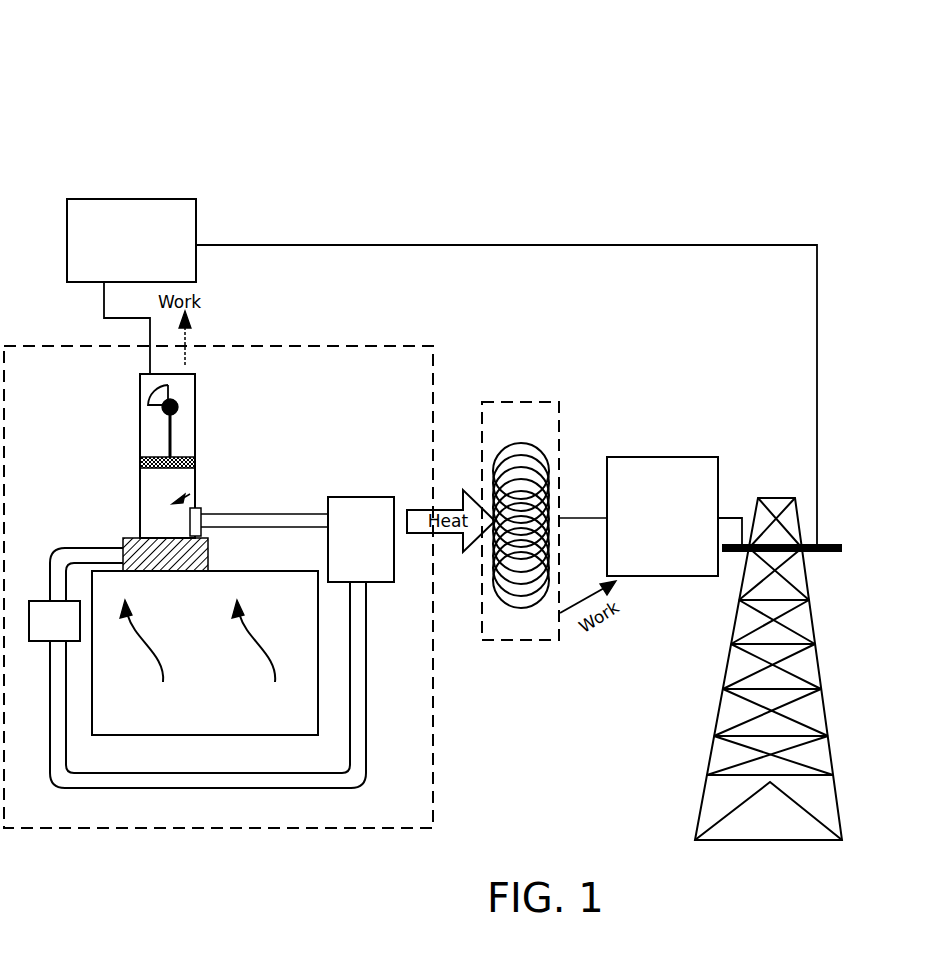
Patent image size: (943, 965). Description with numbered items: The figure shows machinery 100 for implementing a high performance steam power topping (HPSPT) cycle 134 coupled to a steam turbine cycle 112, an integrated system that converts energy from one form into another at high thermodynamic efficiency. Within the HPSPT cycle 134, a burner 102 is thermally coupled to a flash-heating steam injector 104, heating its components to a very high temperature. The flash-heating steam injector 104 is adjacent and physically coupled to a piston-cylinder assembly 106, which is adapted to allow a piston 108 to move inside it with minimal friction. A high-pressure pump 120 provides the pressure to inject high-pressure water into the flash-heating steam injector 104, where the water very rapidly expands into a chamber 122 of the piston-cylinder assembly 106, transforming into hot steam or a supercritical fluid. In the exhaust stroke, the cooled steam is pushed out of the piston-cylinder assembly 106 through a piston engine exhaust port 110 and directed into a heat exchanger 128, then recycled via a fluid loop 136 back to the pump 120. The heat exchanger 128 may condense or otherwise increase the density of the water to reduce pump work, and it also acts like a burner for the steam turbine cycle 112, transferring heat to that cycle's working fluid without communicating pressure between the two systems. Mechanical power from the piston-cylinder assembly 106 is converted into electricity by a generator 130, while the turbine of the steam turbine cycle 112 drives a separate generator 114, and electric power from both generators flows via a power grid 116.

The machinery 100 is at (140, 80).
The burner 102 is at (205, 653).
The flash-heating steam injector 104 is at (123, 540).
The piston-cylinder assembly 106 is at (197, 432).
The piston 108 is at (168, 440).
The piston engine exhaust port 110 is at (205, 537).
The steam turbine cycle 112 is at (560, 430).
The generator 114 is at (650, 516).
The power grid 116 is at (774, 497).
The high-pressure pump 120 is at (54, 621).
The chamber 122 is at (196, 500).
The heat exchanger 128 is at (361, 497).
The generator 130 is at (198, 240).
The high performance steam power topping (HPSPT) cycle 134 is at (273, 830).
The fluid loop 136 is at (115, 790).